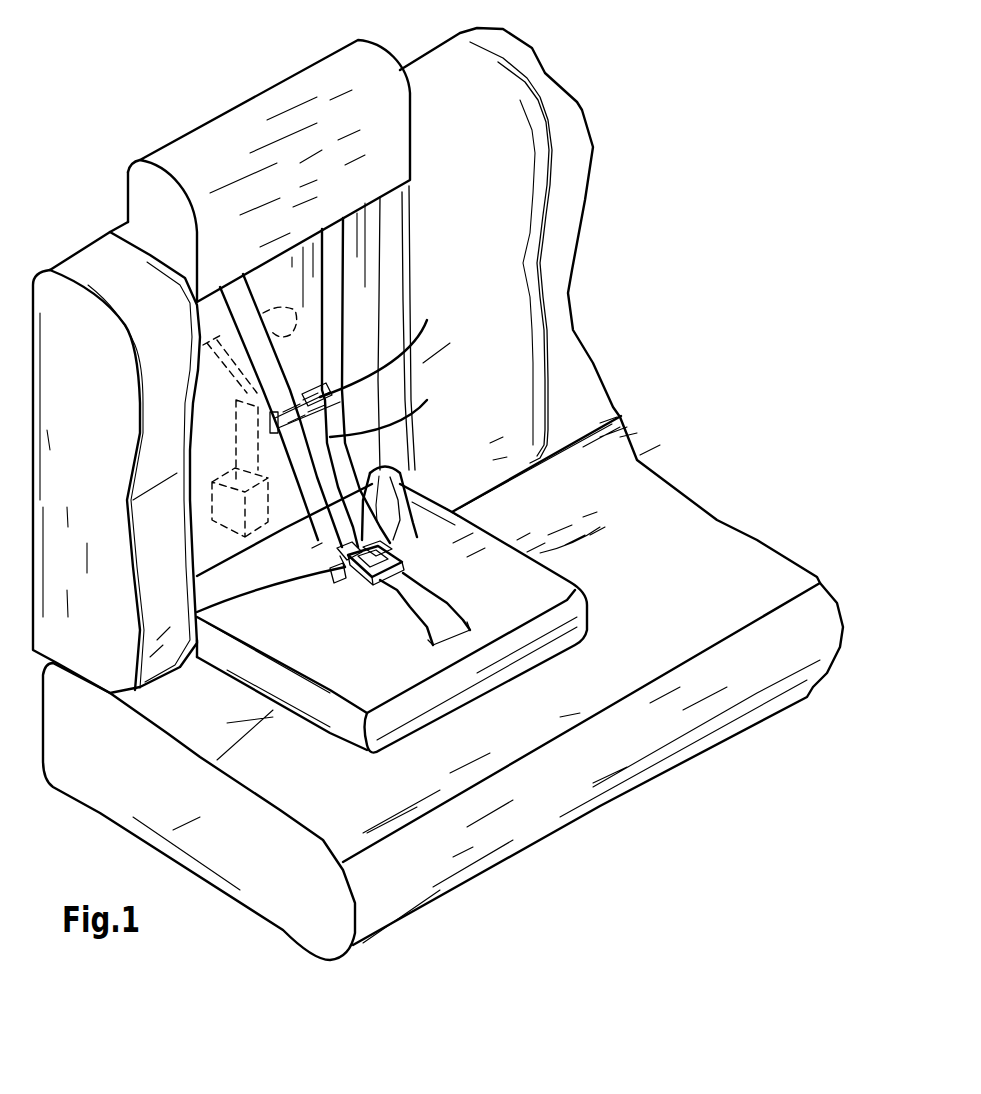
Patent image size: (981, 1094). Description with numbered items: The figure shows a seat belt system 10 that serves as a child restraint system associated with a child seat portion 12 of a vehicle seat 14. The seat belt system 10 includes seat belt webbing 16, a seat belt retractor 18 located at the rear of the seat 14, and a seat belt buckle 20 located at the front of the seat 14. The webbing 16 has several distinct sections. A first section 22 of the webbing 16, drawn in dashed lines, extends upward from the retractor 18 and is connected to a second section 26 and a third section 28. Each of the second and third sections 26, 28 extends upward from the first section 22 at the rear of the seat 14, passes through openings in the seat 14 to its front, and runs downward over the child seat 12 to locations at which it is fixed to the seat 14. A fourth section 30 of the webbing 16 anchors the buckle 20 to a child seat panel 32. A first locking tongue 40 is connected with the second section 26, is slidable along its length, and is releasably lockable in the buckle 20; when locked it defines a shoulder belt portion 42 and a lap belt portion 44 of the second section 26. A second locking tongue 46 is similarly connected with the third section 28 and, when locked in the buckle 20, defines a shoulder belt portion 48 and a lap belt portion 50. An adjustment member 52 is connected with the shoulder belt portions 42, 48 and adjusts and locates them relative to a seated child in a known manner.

The seat belt system 10 is at (94, 230).
The child seat portion 12 is at (427, 434).
The vehicle seat 14 is at (426, 50).
The seat belt webbing 16 is at (347, 297).
The seat belt retractor 18 is at (203, 508).
The seat belt buckle 20 is at (403, 555).
The first section 22 is at (260, 433).
The second section 26 is at (338, 253).
The third section 28 is at (243, 313).
The fourth section 30 is at (430, 607).
The child seat panel 32 is at (560, 583).
The first locking tongue 40 is at (454, 513).
The shoulder belt portion 42 is at (426, 404).
The lap belt portion 44 is at (392, 476).
The second locking tongue 46 is at (337, 570).
The shoulder belt portion 48 is at (318, 538).
The lap belt portion 50 is at (245, 590).
The adjustment member 52 is at (423, 324).